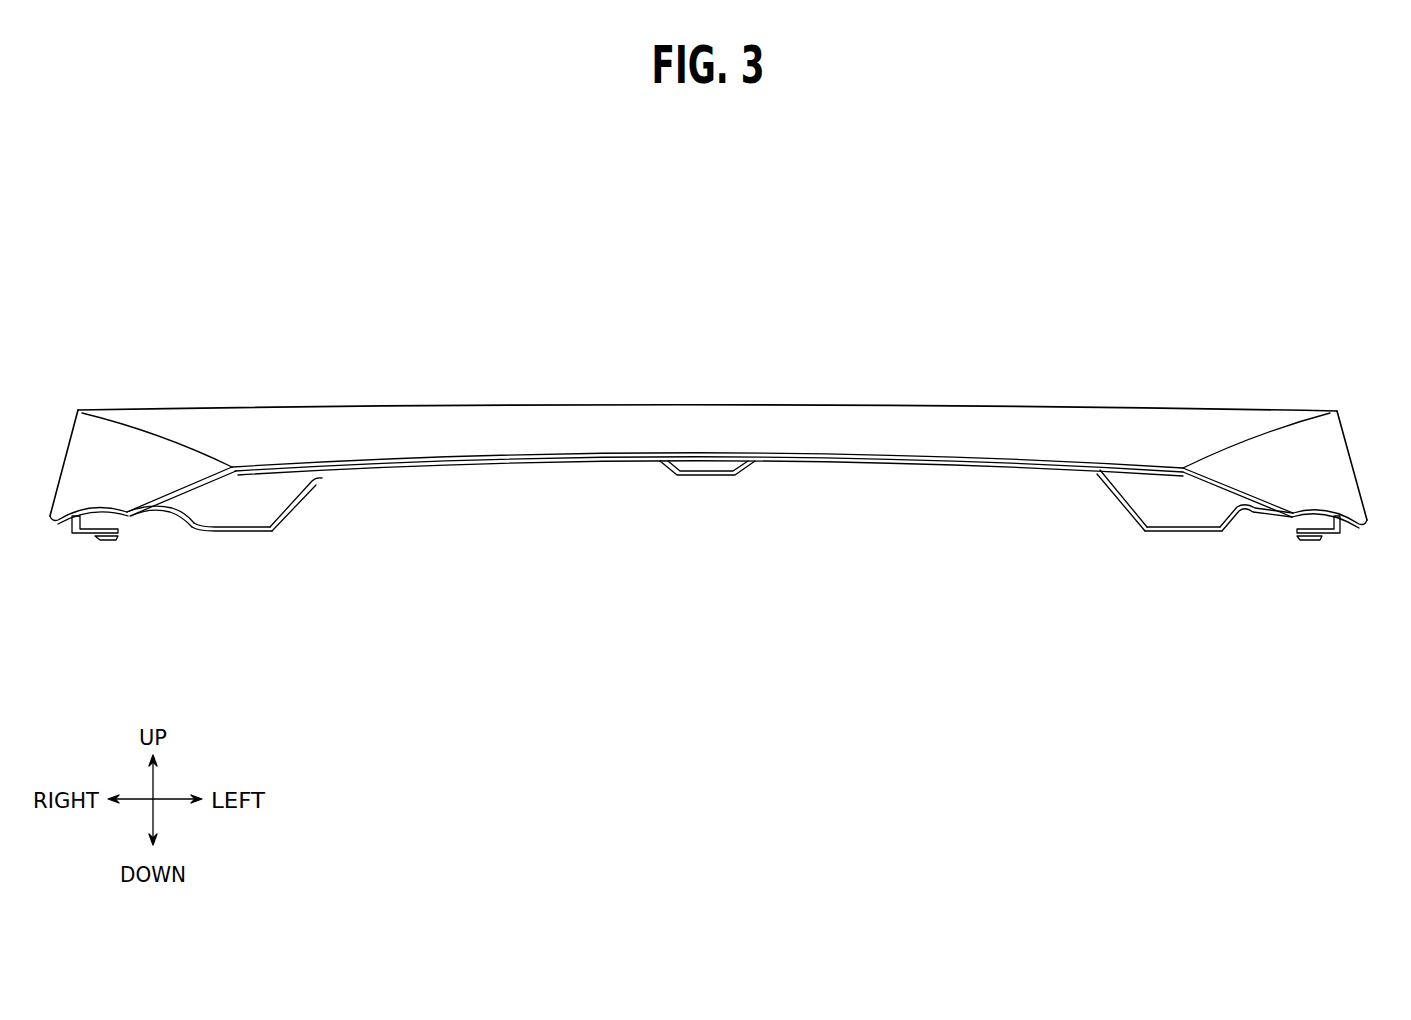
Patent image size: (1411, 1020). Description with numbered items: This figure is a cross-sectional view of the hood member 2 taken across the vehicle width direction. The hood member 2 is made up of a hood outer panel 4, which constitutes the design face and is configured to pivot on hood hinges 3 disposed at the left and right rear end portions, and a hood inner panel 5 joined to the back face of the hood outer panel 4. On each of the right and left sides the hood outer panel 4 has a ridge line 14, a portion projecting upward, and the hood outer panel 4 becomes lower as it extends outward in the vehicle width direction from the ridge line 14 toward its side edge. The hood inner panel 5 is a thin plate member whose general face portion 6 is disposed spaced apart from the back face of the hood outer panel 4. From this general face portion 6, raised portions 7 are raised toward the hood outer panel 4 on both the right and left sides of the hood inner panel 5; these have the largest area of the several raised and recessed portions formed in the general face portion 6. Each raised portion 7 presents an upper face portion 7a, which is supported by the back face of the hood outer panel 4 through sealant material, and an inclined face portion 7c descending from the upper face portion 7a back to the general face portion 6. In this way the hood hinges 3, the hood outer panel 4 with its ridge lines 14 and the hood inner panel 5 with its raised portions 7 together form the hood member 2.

The hood member 2 is at (1320, 645).
The hood hinge 3 is at (90, 543).
The hood outer panel 4 is at (1290, 412).
The hood inner panel 5 is at (1250, 508).
The general face portion 6 is at (222, 528).
The raised portion 7 is at (668, 452).
The upper face portion 7a is at (447, 455).
The inclined face portion 7c is at (292, 508).
The ridge line 14 is at (162, 440).